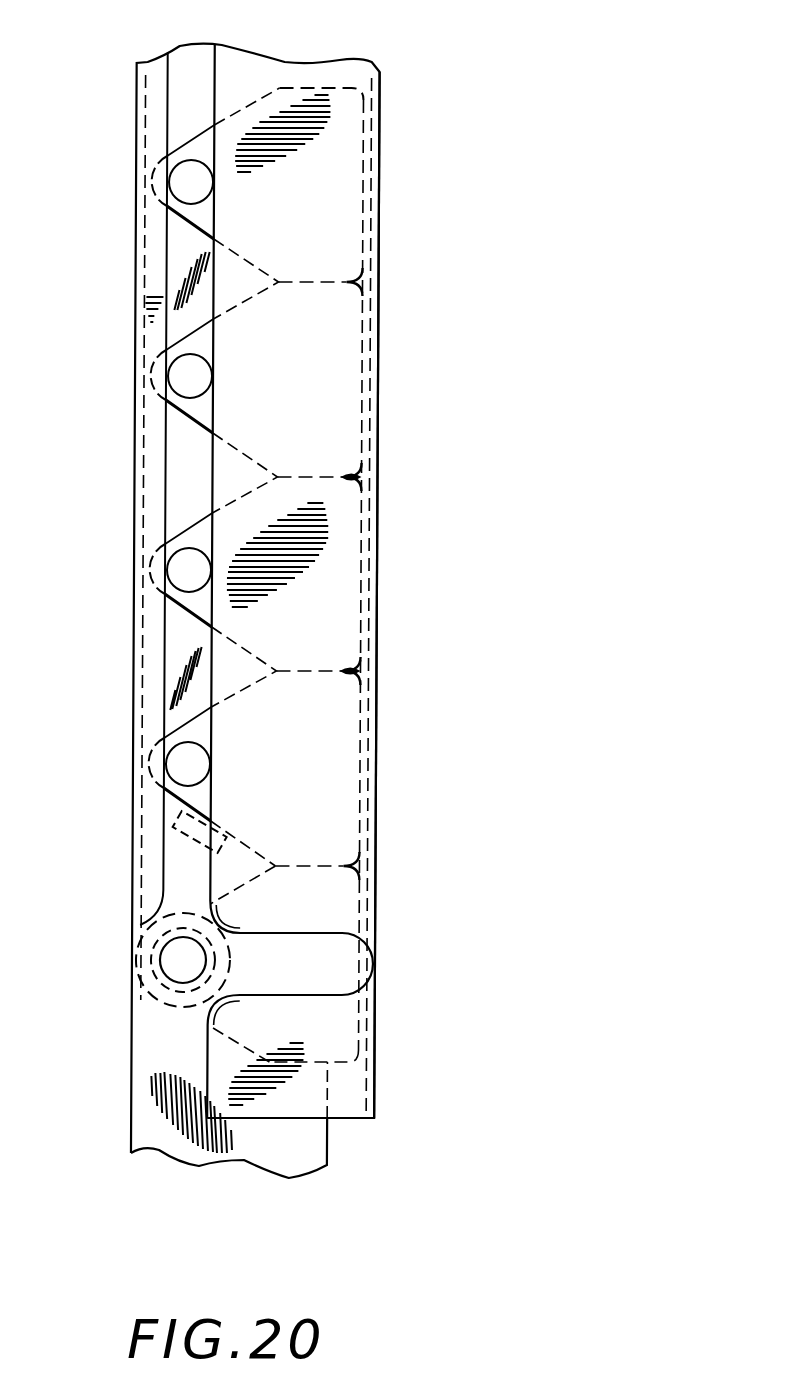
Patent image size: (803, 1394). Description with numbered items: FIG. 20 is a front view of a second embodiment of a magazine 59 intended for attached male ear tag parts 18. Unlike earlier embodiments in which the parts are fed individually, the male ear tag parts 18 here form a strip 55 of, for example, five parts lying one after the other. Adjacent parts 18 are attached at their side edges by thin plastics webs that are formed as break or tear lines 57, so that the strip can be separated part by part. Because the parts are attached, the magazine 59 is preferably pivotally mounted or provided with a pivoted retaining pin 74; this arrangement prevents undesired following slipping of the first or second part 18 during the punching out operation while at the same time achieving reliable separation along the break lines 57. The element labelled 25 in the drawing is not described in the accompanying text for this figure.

The strip 55 is at (318, 86).
The magazine 59 is at (386, 240).
The male ear tag part 18 is at (336, 383).
The break or tear line 57 is at (383, 686).
The pivoted retaining pin 74 is at (177, 820).
The pivot roller 25 is at (188, 960).